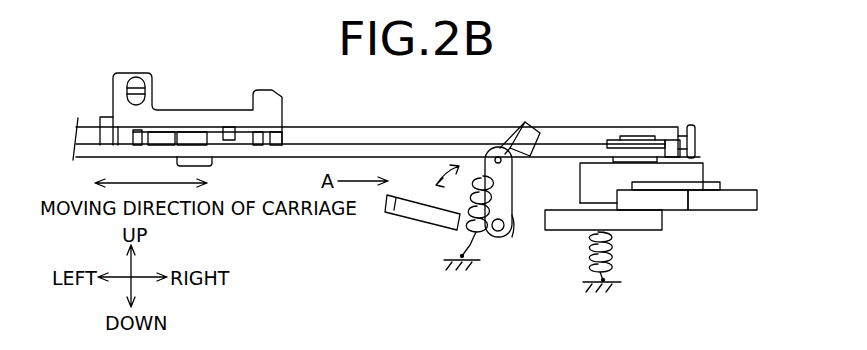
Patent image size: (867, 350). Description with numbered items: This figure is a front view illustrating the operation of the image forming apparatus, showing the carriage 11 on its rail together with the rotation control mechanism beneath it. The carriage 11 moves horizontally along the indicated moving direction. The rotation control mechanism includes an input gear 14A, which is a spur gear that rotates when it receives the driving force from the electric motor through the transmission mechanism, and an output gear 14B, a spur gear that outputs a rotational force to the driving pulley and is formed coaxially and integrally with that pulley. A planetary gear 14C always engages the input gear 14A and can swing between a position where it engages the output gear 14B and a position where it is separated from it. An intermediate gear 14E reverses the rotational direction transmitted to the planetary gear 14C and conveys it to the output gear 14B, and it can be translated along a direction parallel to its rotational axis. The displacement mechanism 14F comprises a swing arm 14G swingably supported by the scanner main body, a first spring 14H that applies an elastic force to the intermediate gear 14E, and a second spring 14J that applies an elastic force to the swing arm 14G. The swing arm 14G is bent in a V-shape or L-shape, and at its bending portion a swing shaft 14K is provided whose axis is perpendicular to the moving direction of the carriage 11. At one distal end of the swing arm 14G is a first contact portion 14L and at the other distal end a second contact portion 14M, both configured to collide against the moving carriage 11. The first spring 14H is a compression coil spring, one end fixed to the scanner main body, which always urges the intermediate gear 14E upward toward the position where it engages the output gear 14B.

The carriage 11 is at (195, 108).
The input gear 14A is at (742, 198).
The output gear 14B is at (692, 162).
The planetary gear 14C is at (667, 201).
The intermediate gear 14E is at (638, 222).
The displacement mechanism 14F is at (513, 249).
The swing arm 14G is at (514, 220).
The first spring 14H is at (618, 249).
The second spring 14J is at (447, 230).
The swing shaft 14K is at (500, 240).
The first contact portion 14L is at (384, 204).
The second contact portion 14M is at (525, 120).